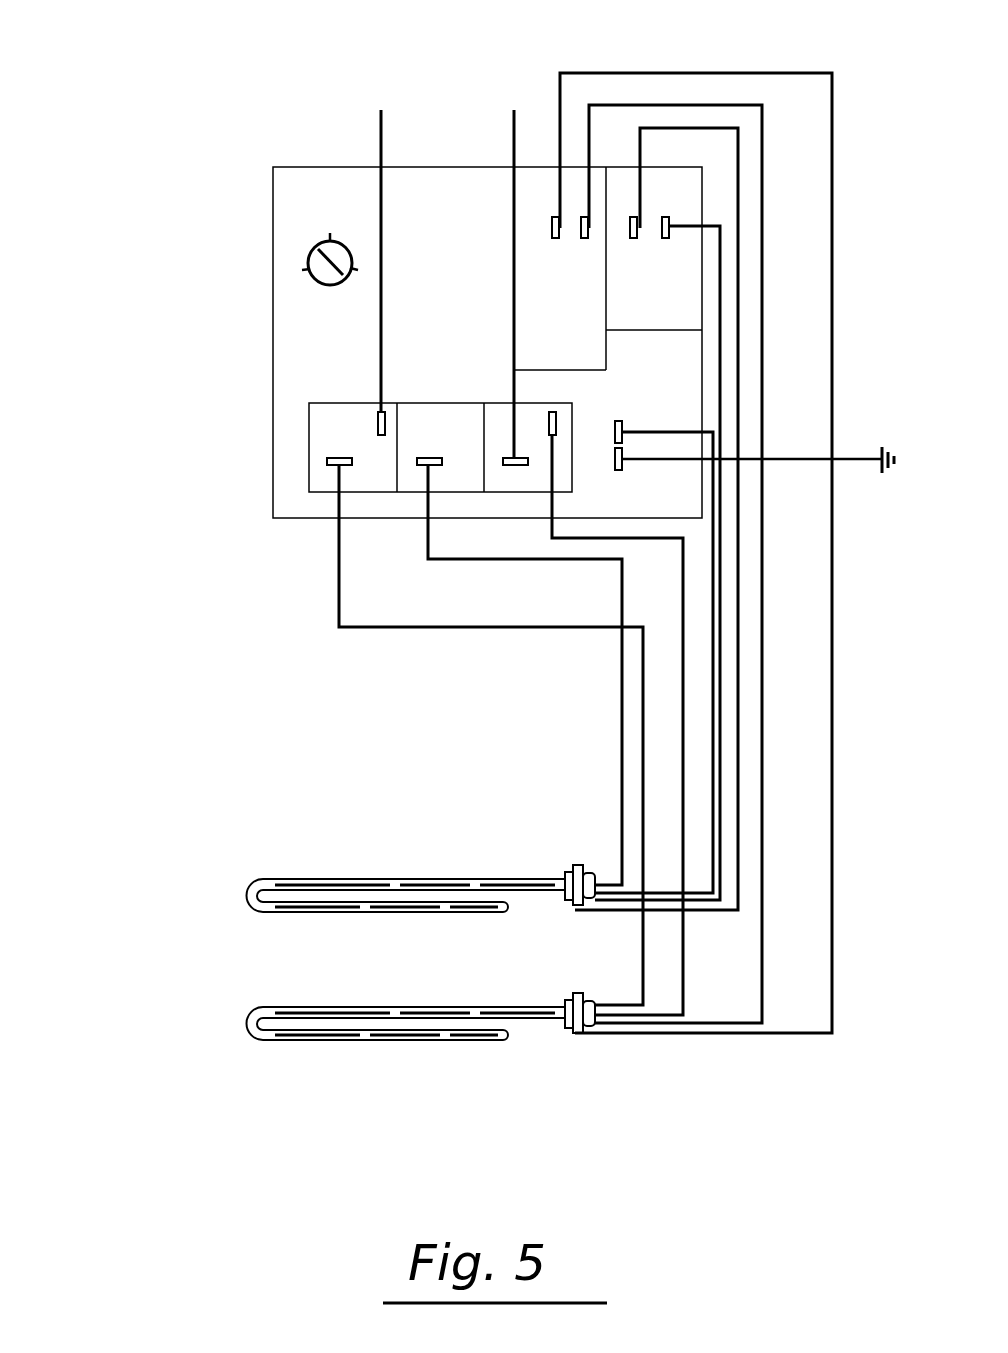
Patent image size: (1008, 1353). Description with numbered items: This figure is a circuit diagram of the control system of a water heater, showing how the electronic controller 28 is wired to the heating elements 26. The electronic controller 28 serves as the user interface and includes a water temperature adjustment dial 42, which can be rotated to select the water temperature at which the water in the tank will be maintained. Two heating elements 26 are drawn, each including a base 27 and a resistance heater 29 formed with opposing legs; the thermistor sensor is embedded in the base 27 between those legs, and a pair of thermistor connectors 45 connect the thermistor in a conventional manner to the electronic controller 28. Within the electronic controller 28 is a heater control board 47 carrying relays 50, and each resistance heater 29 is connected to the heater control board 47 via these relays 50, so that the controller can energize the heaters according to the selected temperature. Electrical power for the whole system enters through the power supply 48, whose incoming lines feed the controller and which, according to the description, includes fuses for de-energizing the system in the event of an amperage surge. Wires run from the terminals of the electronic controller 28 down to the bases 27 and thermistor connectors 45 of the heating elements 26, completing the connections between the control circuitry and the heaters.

The heating element 26 is at (247, 912).
The base 27 is at (583, 865).
The electronic controller 28 is at (227, 168).
The resistance heater 29 is at (380, 880).
The water temperature adjustment dial 42 is at (318, 283).
The thermistor connectors 45 is at (595, 908).
The heater control board 47 is at (309, 440).
The power supply 48 is at (516, 106).
The relays 50 is at (492, 403).